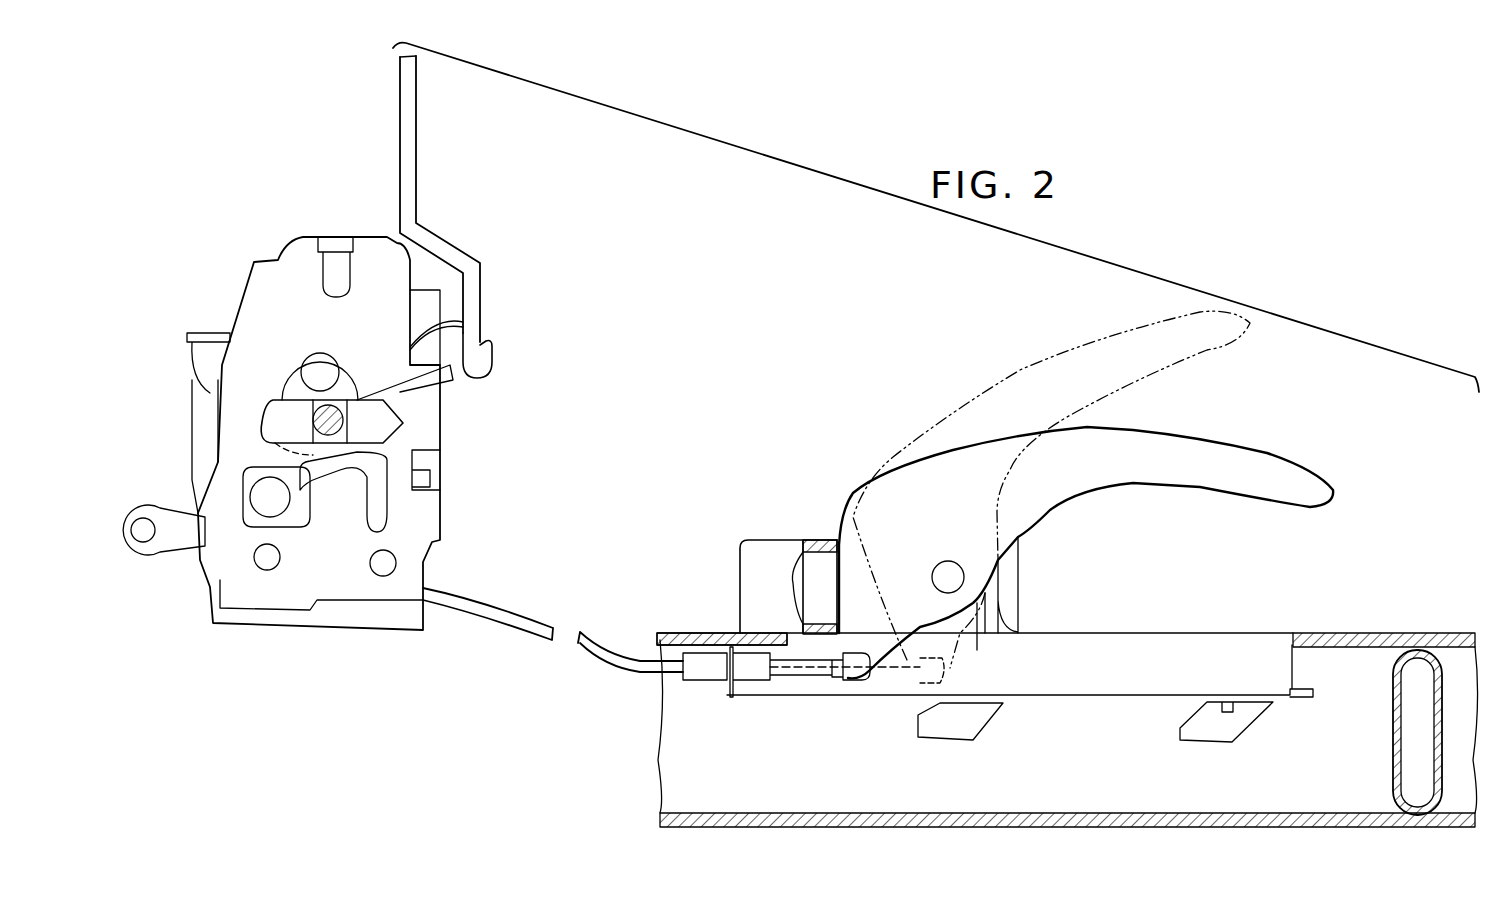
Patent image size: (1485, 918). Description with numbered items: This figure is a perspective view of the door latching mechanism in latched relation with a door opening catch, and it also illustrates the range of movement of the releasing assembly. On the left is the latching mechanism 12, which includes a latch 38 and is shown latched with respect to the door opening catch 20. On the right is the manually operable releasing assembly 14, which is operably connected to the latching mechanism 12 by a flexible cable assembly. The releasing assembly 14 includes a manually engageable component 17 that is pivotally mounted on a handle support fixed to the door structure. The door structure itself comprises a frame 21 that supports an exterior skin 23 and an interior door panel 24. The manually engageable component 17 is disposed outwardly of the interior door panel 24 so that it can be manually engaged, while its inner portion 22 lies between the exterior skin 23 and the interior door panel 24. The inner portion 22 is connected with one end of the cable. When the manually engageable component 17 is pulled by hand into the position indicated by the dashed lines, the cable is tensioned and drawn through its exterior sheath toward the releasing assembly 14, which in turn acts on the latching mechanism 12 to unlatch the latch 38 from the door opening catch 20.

The latching mechanism 12 is at (262, 228).
The latch 38 is at (375, 411).
The door opening catch 20 is at (333, 440).
The manually operable releasing assembly 14 is at (845, 424).
The manually engageable component 17 is at (1242, 463).
The inner portion 22 is at (883, 655).
The interior door panel 24 is at (1348, 640).
The frame 21 is at (1440, 647).
The exterior skin 23 is at (1315, 826).